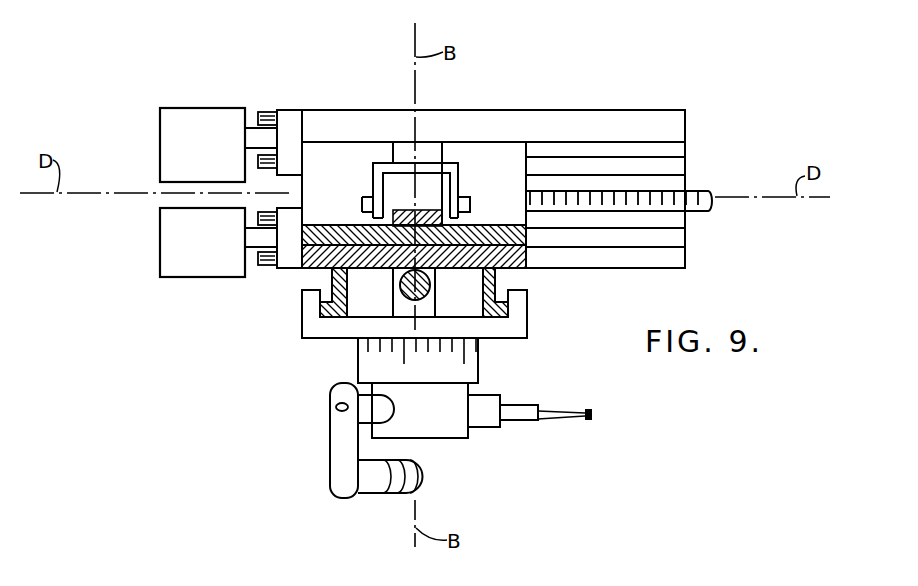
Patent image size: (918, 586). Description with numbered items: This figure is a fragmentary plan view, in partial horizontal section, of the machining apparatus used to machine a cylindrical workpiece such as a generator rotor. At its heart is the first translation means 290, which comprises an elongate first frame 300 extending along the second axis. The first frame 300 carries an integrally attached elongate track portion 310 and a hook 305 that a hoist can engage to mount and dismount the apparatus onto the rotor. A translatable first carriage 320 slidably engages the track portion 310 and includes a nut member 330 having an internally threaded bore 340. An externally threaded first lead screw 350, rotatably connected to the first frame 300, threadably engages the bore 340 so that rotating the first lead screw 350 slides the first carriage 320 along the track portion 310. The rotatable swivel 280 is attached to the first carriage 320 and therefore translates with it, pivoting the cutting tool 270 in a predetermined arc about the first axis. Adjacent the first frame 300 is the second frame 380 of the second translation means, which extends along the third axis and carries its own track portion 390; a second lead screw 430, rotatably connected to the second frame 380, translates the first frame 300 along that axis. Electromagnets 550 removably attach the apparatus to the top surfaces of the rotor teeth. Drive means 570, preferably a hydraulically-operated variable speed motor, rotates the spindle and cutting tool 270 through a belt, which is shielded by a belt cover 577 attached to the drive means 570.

The first translation means 290 is at (246, 86).
The first frame 300 is at (339, 117).
The second frame 380 is at (612, 122).
The track portion 390 is at (672, 165).
The second lead screw 430 is at (702, 212).
The hook 305 is at (457, 177).
The electromagnet 550 is at (172, 255).
The track portion 310 is at (333, 278).
The first carriage 320 is at (311, 325).
The first lead screw 350 is at (403, 284).
The nut member 330 is at (420, 296).
The internally threaded bore 340 is at (425, 292).
The swivel 280 is at (470, 366).
The cutting tool 270 is at (562, 413).
The belt cover 577 is at (340, 448).
The drive means 570 is at (420, 490).